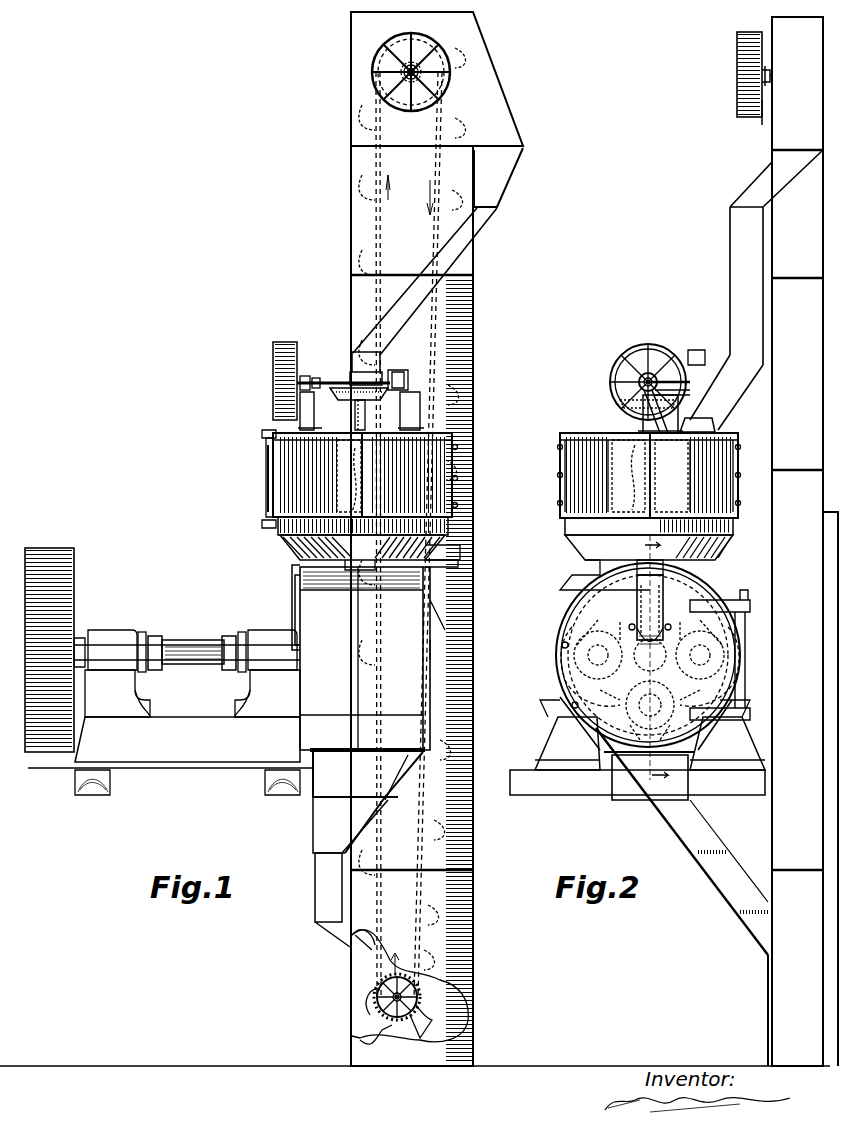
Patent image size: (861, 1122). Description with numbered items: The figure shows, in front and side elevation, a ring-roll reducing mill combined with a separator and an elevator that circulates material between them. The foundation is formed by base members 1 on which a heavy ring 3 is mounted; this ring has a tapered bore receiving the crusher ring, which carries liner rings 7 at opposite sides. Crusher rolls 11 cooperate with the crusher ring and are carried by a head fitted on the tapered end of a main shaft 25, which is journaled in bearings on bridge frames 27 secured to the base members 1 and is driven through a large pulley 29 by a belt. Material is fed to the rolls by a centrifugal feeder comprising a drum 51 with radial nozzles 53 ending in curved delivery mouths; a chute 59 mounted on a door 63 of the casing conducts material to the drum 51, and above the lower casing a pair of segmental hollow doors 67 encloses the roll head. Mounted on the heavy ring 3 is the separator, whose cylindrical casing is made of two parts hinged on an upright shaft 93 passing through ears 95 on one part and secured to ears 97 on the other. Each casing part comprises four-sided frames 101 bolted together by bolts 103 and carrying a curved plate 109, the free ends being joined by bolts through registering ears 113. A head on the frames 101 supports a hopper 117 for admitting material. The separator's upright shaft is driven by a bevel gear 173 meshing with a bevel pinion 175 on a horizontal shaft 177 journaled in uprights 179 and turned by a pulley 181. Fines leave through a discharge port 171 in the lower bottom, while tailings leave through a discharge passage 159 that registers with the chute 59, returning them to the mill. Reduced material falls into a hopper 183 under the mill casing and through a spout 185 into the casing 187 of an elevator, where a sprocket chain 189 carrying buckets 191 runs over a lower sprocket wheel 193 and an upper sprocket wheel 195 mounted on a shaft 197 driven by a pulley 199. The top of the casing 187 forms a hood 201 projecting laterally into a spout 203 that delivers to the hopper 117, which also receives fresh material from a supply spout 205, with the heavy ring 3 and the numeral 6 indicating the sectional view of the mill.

In FIG. 1, the base members 1 is at (187, 758).
In FIG. 2, the base members 1 is at (570, 740).
In FIG. 1, the heavy ring 3 is at (362, 678).
In FIG. 2, the section line 6 is at (652, 664).
In FIG. 2, the liner rings 7 is at (572, 610).
In FIG. 2, the crusher rolls 11 is at (562, 630).
In FIG. 1, the main shaft 25 is at (190, 665).
In FIG. 1, the bridge frames 27 is at (127, 700).
In FIG. 1, the large pulley 29 is at (74, 590).
In FIG. 2, the drum 51 is at (644, 660).
In FIG. 2, the nozzles 53 is at (576, 640).
In FIG. 1, the chute 59 is at (437, 580).
In FIG. 2, the chute 59 is at (640, 598).
In FIG. 1, the door 63 is at (412, 652).
In FIG. 2, the door 63 is at (557, 672).
In FIG. 1, the hollow doors 67 is at (290, 598).
In FIG. 1, the upright shaft 93 is at (266, 472).
In FIG. 1, the ears 95 is at (266, 442).
In FIG. 1, the ears 97 is at (262, 432).
In FIG. 2, the four-sided frames 101 is at (586, 438).
In FIG. 1, the bolts 103 is at (355, 455).
In FIG. 2, the bolts 103 is at (750, 503).
In FIG. 1, the curved plate 109 is at (285, 485).
In FIG. 2, the curved plate 109 is at (565, 488).
In FIG. 1, the ears 113 is at (458, 447).
In FIG. 2, the ears 113 is at (627, 477).
In FIG. 2, the hopper 117 is at (705, 408).
In FIG. 1, the discharge passage 159 is at (435, 548).
In FIG. 2, the discharge passage 159 is at (640, 548).
In FIG. 1, the discharge port 171 is at (360, 553).
In FIG. 2, the discharge port 171 is at (580, 565).
In FIG. 1, the bevel gear 173 is at (335, 385).
In FIG. 2, the bevel gear 173 is at (622, 390).
In FIG. 1, the bevel pinion 175 is at (400, 372).
In FIG. 2, the bevel pinion 175 is at (650, 374).
In FIG. 1, the horizontal shaft 177 is at (356, 395).
In FIG. 2, the horizontal shaft 177 is at (648, 372).
In FIG. 1, the uprights 179 is at (316, 415).
In FIG. 2, the uprights 179 is at (645, 415).
In FIG. 1, the pulley 181 is at (270, 350).
In FIG. 2, the pulley 181 is at (612, 360).
In FIG. 1, the hopper 183 is at (316, 778).
In FIG. 2, the hopper 183 is at (648, 790).
In FIG. 1, the spout 185 is at (313, 895).
In FIG. 2, the spout 185 is at (718, 890).
In FIG. 1, the casing 187 is at (355, 965).
In FIG. 2, the casing 187 is at (768, 977).
In FIG. 1, the sprocket chain 189 is at (374, 983).
In FIG. 1, the buckets 191 is at (362, 940).
In FIG. 1, the lower sprocket wheel 193 is at (420, 1000).
In FIG. 1, the upper sprocket wheel 195 is at (430, 98).
In FIG. 1, the shaft 197 is at (418, 72).
In FIG. 2, the shaft 197 is at (751, 104).
In FIG. 1, the pulley 199 is at (430, 38).
In FIG. 2, the pulley 199 is at (737, 75).
In FIG. 1, the hood 201 is at (515, 122).
In FIG. 2, the hood 201 is at (775, 141).
In FIG. 1, the spout 203 is at (455, 243).
In FIG. 2, the spout 203 is at (728, 270).
In FIG. 1, the supply spout 205 is at (345, 340).
In FIG. 2, the supply spout 205 is at (700, 350).